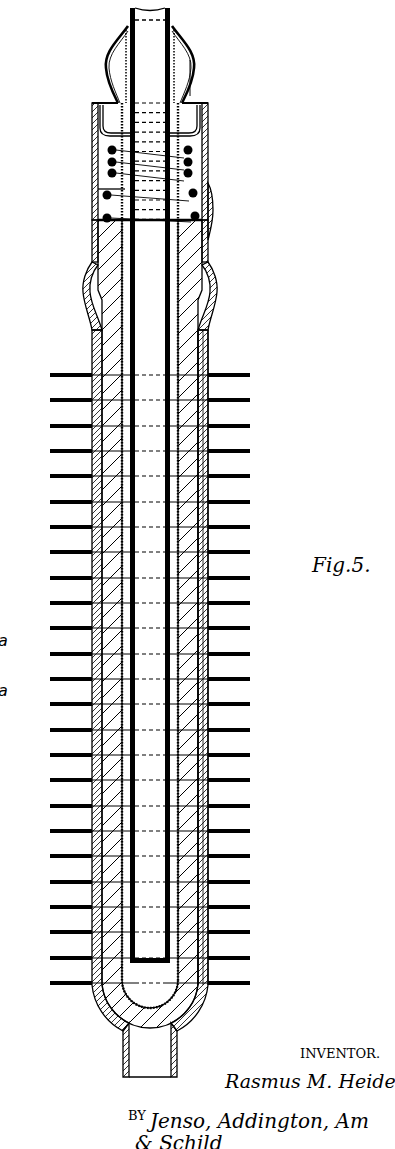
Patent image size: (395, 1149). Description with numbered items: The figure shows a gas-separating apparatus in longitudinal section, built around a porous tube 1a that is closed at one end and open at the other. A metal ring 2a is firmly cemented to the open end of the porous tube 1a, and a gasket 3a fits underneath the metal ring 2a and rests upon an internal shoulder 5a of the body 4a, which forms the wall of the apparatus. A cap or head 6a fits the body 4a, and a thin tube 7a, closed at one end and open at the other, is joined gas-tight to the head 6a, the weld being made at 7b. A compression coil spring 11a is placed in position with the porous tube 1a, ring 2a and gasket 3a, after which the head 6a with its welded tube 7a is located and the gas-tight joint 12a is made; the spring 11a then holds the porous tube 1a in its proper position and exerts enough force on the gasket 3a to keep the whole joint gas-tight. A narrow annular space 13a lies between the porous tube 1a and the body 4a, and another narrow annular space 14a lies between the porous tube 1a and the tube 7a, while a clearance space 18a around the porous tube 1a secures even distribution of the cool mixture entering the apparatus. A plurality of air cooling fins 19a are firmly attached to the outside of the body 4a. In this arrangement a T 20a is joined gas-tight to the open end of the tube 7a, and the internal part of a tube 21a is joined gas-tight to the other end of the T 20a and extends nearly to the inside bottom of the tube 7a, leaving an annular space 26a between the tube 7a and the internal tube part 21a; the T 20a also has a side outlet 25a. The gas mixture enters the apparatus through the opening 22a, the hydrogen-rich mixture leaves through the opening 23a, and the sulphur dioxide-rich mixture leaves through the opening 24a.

The porous tube 1a is at (209, 596).
The metal ring 2a is at (201, 232).
The gasket 3a is at (209, 258).
The body 4a is at (205, 356).
The internal shoulder 5a is at (96, 262).
The cap 6a is at (207, 118).
The thin tube 7a is at (115, 118).
The weld 7b is at (97, 192).
The compression coil spring 11a is at (107, 166).
The gas-tight joint 12a is at (100, 104).
The narrow annular space 13a is at (206, 645).
The narrow annular space 14a is at (180, 697).
The clearance space 18a is at (95, 298).
The air cooling fins 19a is at (250, 757).
The T 20a is at (106, 66).
The internal tube part 21a is at (130, 343).
The gas mixture inlet opening 22a is at (214, 294).
The hydrogen-rich mixture outlet opening 23a is at (211, 208).
The sulphur dioxide-rich mixture outlet opening 24a is at (140, 1055).
The side outlet 25a is at (191, 70).
The annular space 26a is at (176, 465).